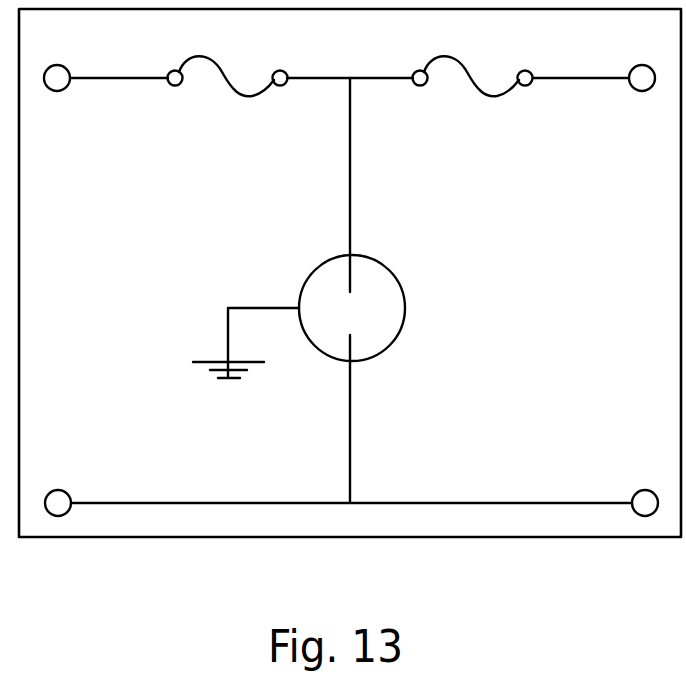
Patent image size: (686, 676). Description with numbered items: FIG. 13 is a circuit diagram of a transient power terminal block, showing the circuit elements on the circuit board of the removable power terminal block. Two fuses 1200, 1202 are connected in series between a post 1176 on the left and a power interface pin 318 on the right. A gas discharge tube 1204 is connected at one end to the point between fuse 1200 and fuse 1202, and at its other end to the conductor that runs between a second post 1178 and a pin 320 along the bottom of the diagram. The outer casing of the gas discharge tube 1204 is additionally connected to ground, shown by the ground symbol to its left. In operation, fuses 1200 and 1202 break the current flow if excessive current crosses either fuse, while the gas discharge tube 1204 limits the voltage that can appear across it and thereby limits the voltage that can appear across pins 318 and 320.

The post 1176 is at (65, 91).
The post 1178 is at (62, 490).
The fuse 1200 is at (242, 97).
The fuse 1202 is at (490, 97).
The gas discharge tube 1204 is at (385, 320).
The power interface pin 318 is at (640, 91).
The pin 320 is at (633, 490).